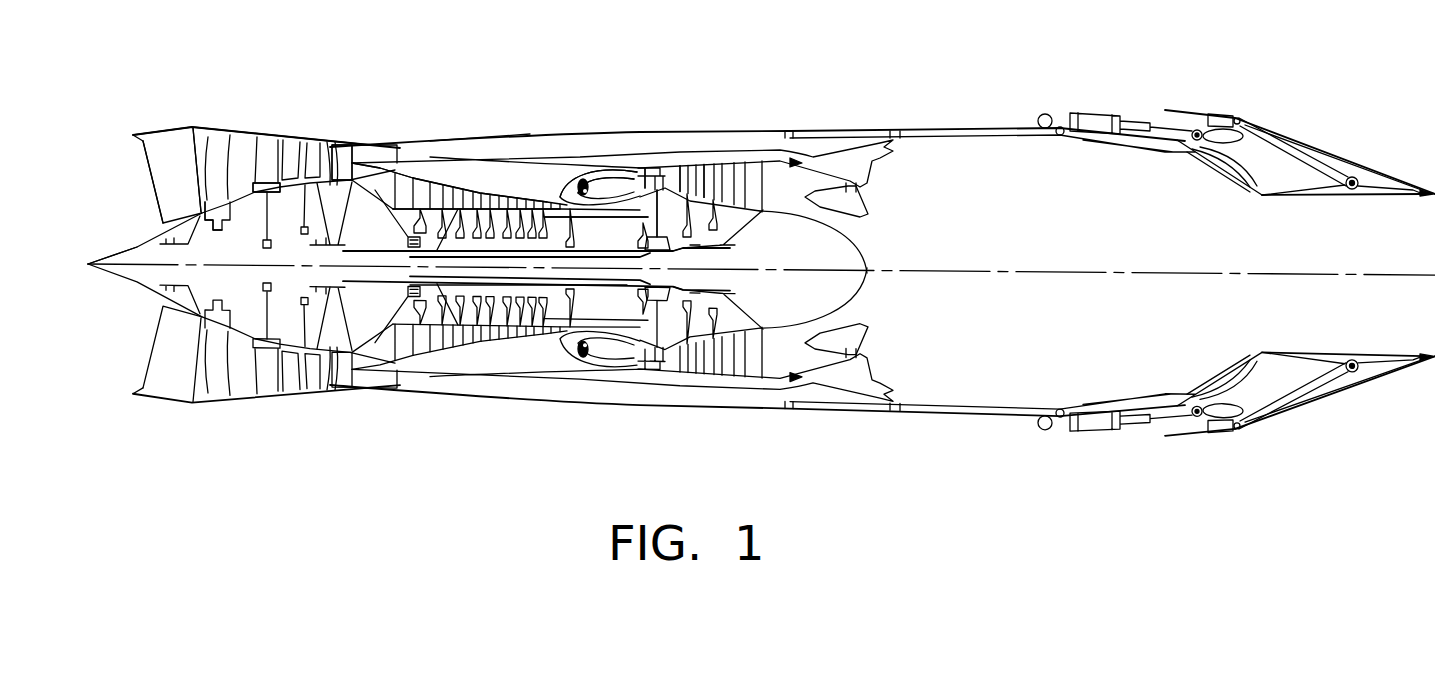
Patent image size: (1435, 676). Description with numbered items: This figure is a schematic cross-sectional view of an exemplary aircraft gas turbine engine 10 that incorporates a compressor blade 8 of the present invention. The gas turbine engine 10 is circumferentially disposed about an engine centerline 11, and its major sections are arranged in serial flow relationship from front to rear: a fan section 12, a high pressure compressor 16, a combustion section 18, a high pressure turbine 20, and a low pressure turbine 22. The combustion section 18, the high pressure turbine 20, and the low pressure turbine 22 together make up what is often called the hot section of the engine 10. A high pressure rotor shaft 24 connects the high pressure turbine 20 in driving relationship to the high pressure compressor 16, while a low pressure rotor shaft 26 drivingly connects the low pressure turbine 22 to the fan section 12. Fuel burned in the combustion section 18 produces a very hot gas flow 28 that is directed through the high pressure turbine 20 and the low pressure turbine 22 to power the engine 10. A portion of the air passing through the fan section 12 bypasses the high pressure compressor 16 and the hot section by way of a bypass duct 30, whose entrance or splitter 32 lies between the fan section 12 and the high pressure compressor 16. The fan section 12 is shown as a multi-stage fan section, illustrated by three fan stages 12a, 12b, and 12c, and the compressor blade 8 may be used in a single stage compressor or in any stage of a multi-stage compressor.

The compressor blade 8 is at (418, 195).
The gas turbine engine 10 is at (473, 416).
The engine centerline 11 is at (133, 258).
The fan section 12 is at (237, 118).
The fan stage 12a is at (245, 250).
The fan stage 12b is at (272, 196).
The fan stage 12c is at (330, 142).
The high pressure compressor 16 is at (472, 195).
The combustion section 18 is at (579, 176).
The high pressure turbine 20 is at (655, 170).
The low pressure turbine 22 is at (700, 165).
The high pressure rotor shaft 24 is at (573, 225).
The low pressure rotor shaft 26 is at (634, 284).
The hot gas flow 28 is at (601, 182).
The bypass duct 30 is at (503, 145).
The splitter 32 is at (357, 160).